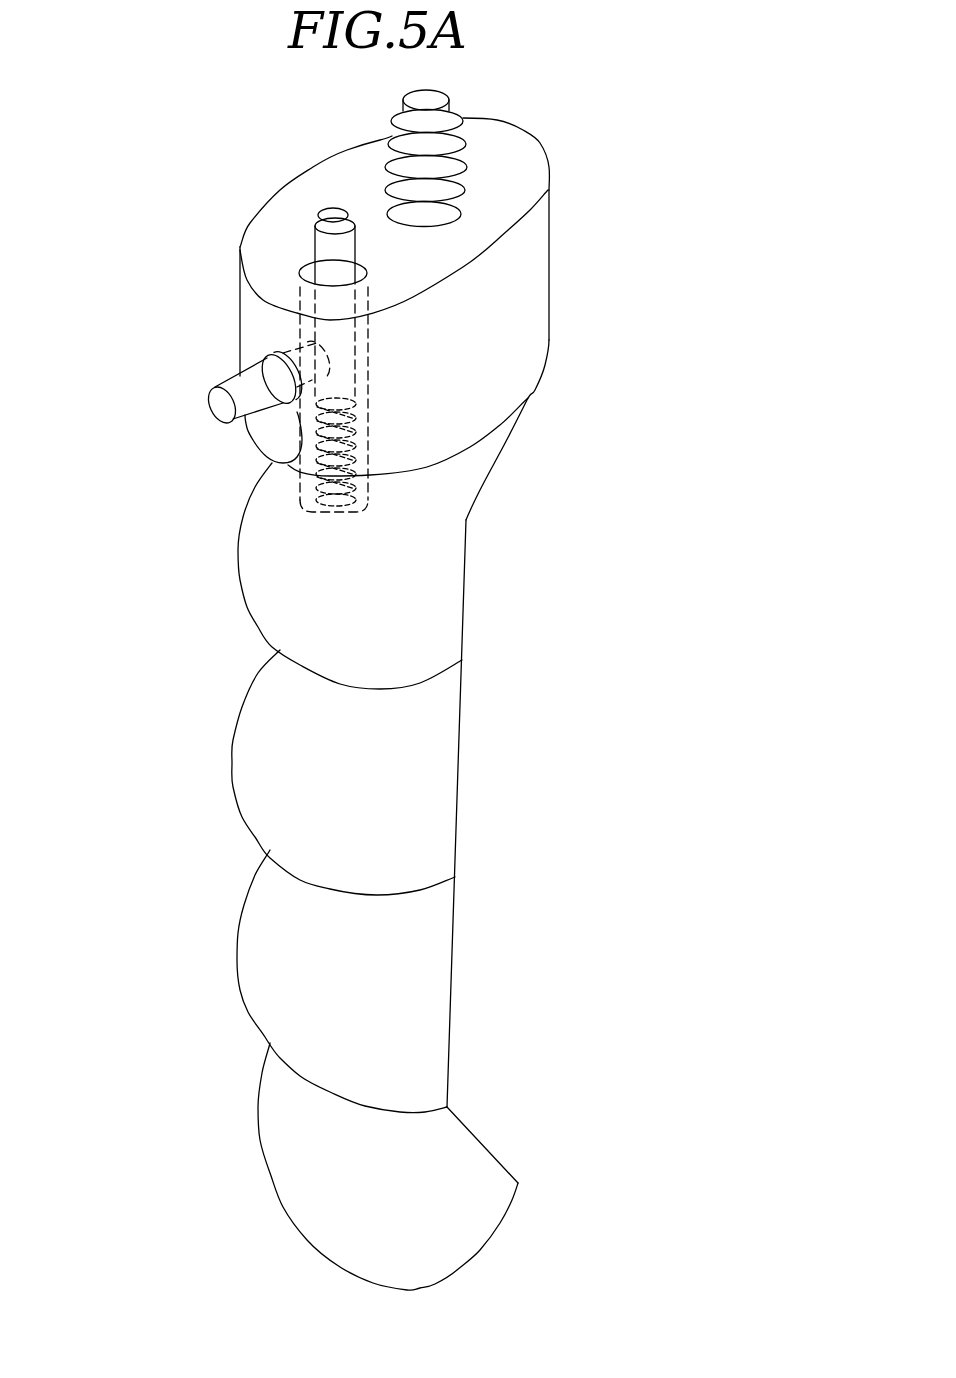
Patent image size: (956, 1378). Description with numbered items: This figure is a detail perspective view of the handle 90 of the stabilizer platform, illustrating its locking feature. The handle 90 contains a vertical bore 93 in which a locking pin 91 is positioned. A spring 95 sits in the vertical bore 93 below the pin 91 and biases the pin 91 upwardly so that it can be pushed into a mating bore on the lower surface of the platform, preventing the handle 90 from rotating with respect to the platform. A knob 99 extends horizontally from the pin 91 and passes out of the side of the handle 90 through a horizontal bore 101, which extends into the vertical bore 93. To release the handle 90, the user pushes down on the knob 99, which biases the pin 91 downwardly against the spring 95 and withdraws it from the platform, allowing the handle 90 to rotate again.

The handle 90 is at (326, 1167).
The locking pin 91 is at (323, 247).
The vertical bore 93 is at (368, 340).
The spring 95 is at (360, 445).
The knob 99 is at (207, 397).
The horizontal bore 101 is at (270, 427).